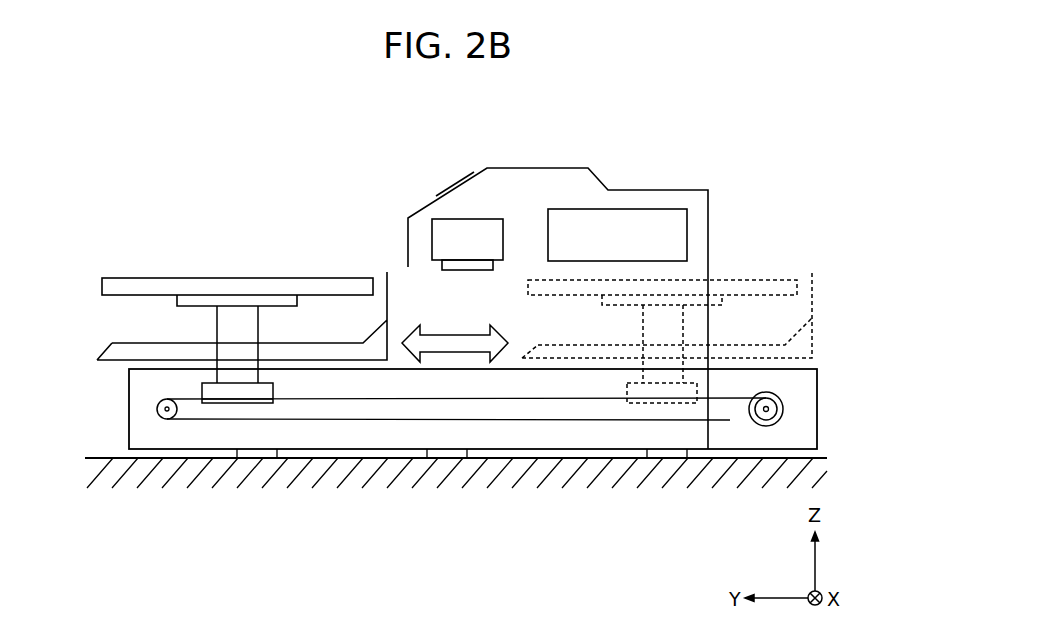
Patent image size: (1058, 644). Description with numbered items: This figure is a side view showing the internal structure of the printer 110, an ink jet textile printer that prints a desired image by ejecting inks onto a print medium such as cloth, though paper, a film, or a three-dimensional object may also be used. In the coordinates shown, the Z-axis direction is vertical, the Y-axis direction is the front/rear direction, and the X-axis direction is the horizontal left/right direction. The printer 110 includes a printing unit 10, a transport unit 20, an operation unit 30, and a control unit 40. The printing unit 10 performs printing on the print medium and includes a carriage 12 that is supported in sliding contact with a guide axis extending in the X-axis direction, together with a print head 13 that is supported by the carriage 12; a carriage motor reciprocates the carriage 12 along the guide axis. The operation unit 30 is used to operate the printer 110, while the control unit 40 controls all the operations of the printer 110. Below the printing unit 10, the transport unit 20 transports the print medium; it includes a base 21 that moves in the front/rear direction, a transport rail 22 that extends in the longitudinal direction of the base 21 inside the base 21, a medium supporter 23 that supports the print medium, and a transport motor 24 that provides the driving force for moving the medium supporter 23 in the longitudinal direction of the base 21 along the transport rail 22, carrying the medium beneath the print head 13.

The printer 110 is at (607, 254).
The printing unit 10 is at (473, 200).
The carriage 12 is at (448, 230).
The print head 13 is at (447, 263).
The operation unit 30 is at (450, 183).
The control unit 40 is at (638, 230).
The transport unit 20 is at (445, 334).
The base 21 is at (110, 414).
The transport rail 22 is at (452, 407).
The medium supporter 23 is at (200, 250).
The transport motor 24 is at (782, 407).